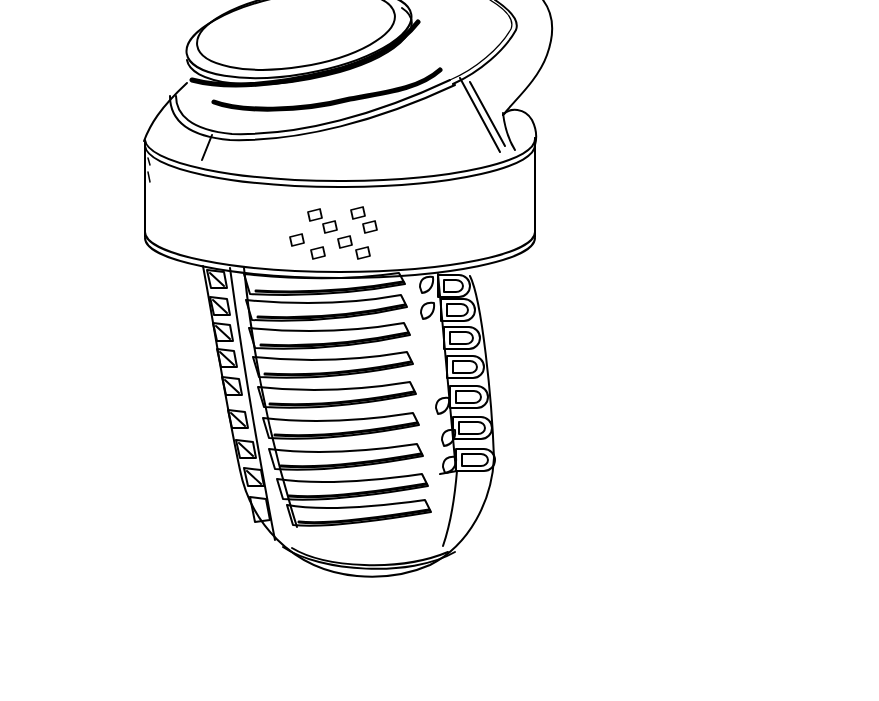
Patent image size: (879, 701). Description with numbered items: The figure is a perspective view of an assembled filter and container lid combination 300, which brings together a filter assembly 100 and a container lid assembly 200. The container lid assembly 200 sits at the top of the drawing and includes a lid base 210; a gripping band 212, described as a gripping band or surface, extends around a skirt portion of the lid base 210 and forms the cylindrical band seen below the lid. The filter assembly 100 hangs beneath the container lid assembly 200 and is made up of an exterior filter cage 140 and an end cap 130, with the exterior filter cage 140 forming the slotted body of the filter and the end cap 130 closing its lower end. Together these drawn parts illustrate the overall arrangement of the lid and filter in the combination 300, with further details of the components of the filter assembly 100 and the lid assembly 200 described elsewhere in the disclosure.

The filter and container lid combination 300 is at (636, 104).
The container lid assembly 200 is at (112, 182).
The lid base 210 is at (517, 123).
The gripping band 212 is at (520, 210).
The filter assembly 100 is at (195, 431).
The exterior filter cage 140 is at (477, 483).
The end cap 130 is at (373, 577).